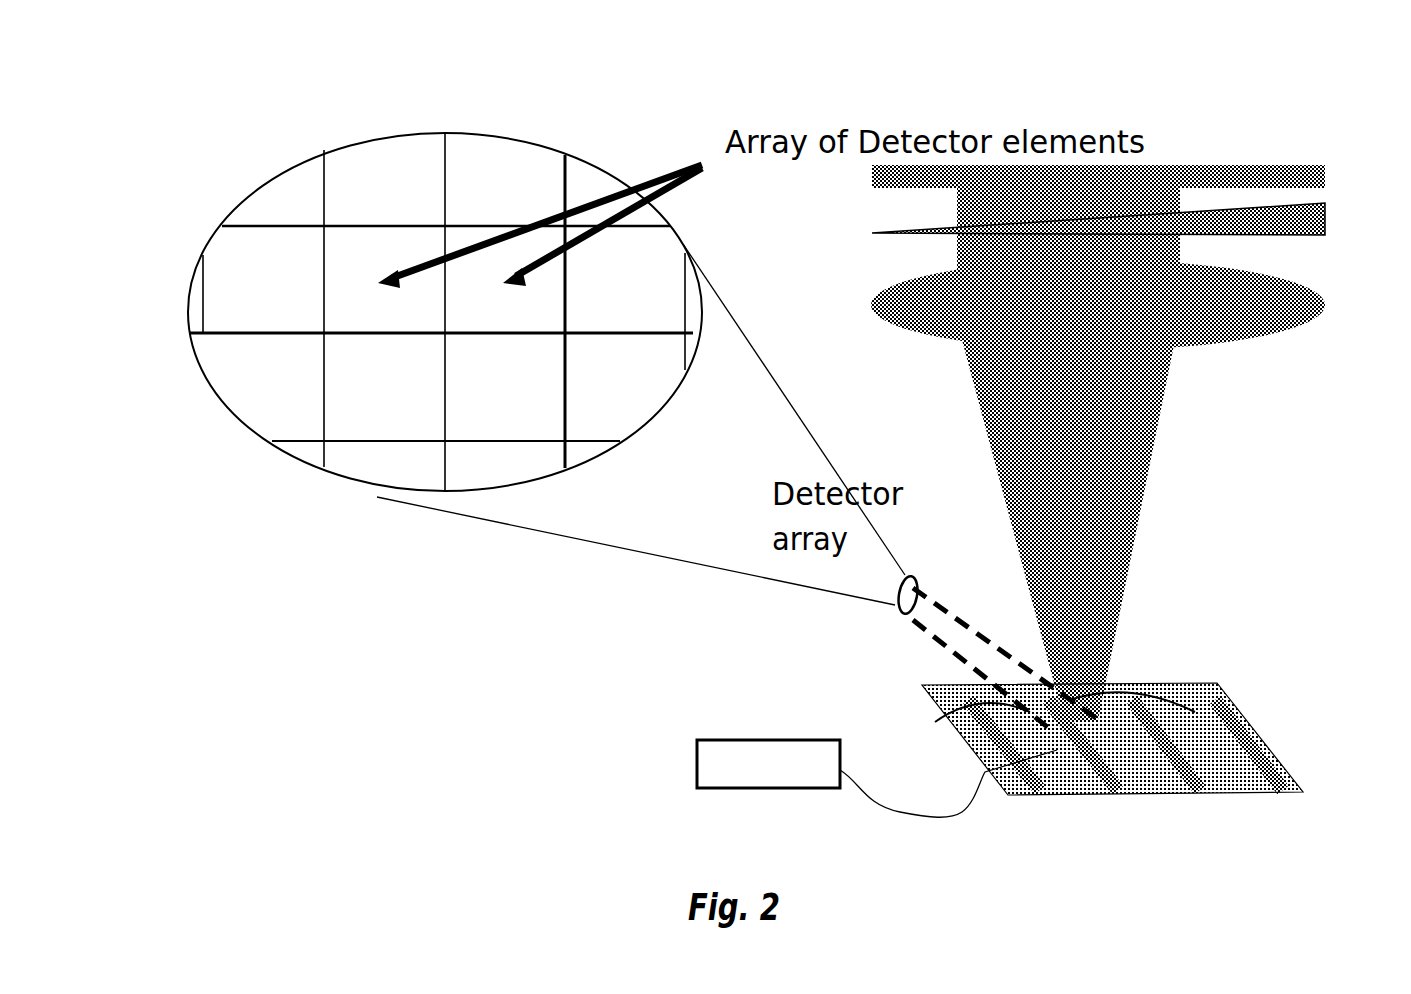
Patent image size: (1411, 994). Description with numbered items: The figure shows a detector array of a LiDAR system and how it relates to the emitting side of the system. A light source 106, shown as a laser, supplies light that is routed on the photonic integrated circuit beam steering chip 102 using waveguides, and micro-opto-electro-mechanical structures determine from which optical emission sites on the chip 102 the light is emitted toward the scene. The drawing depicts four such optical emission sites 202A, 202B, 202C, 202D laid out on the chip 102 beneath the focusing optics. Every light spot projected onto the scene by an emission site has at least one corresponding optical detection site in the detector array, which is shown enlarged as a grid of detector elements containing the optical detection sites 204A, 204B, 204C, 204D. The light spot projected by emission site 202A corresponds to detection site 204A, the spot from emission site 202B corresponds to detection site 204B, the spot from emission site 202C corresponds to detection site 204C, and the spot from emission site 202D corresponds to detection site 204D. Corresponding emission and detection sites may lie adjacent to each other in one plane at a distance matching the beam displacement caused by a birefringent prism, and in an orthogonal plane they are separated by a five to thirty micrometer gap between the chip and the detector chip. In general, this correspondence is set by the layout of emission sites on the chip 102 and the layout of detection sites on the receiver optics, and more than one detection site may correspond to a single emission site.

The photonic integrated circuit beam steering chip 102 is at (1277, 752).
The light source 106 is at (683, 770).
The optical emission site 202A is at (1110, 752).
The optical emission site 202B is at (1097, 752).
The optical emission site 202C is at (1080, 758).
The optical emission site 202D is at (988, 772).
The optical detection site 204A is at (213, 280).
The optical detection site 204B is at (368, 280).
The optical detection site 204C is at (482, 280).
The optical detection site 204D is at (652, 297).